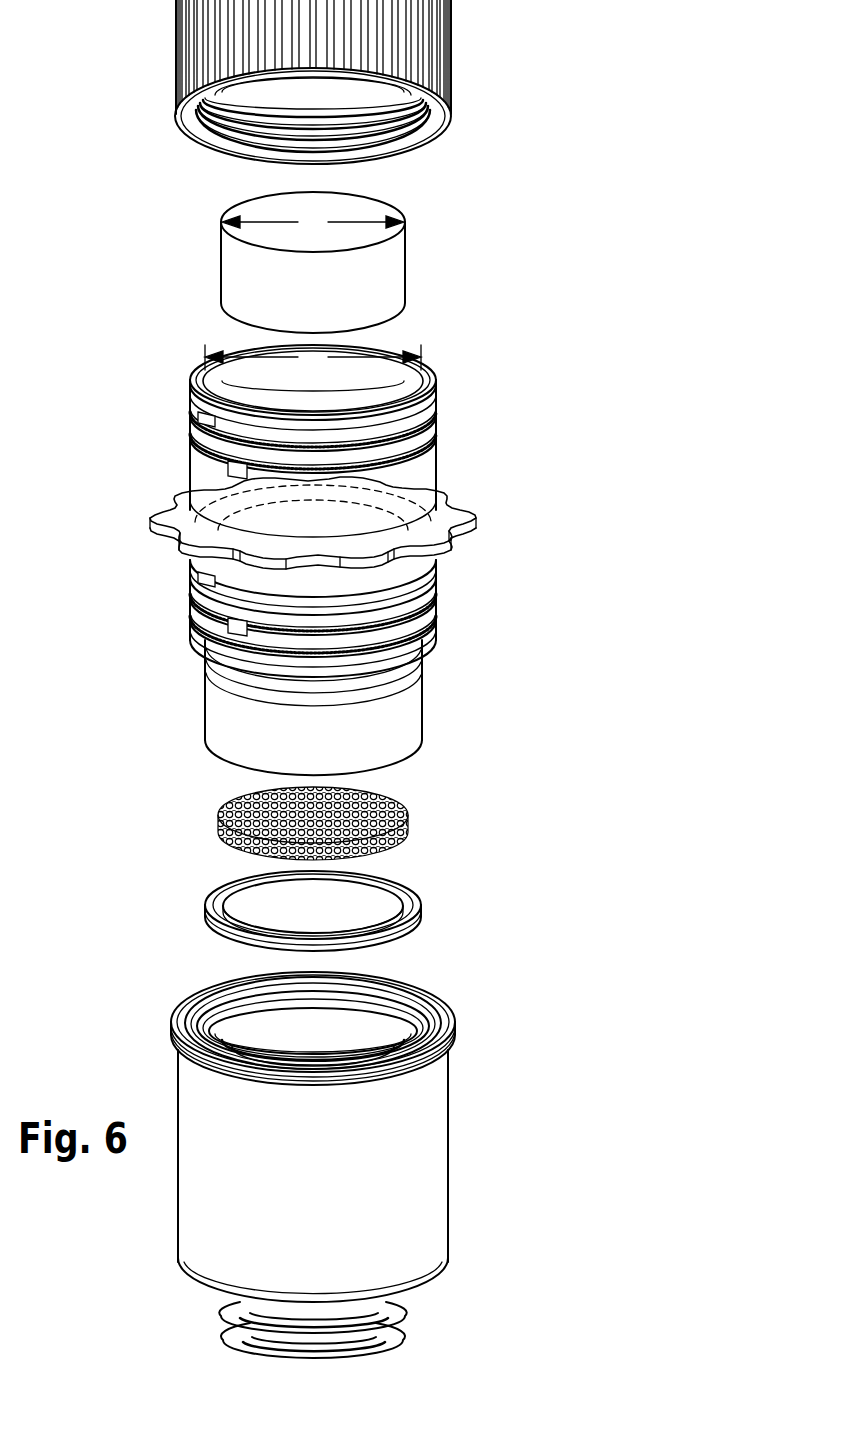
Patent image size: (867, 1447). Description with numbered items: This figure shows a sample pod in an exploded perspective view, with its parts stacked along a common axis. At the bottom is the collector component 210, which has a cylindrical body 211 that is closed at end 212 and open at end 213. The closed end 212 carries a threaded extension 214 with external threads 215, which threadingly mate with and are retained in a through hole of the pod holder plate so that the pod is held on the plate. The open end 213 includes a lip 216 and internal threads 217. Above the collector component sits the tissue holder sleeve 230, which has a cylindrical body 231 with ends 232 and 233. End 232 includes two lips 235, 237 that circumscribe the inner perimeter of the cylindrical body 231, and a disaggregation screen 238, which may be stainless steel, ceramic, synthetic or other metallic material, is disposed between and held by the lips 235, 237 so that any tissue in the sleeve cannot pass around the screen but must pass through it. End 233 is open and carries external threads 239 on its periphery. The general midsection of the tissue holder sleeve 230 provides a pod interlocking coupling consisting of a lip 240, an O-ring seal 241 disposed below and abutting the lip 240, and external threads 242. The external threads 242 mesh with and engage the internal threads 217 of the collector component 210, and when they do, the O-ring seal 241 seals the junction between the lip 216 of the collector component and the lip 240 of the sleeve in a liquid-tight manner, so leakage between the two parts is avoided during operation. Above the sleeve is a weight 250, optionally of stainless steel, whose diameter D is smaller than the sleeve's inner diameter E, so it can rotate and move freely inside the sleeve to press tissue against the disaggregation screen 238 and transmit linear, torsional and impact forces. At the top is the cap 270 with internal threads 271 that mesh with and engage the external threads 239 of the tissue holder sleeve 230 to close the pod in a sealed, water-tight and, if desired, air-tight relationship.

The cap 270 is at (280, 102).
The internal threads 271 is at (380, 125).
The weight 250 is at (235, 262).
The tissue holder sleeve 230 is at (340, 577).
The end 233 is at (400, 390).
The external threads 239 is at (410, 430).
The lip 240 is at (462, 525).
The O-ring seal 241 is at (370, 570).
The external threads 242 is at (202, 600).
The cylindrical body 231 is at (421, 700).
The lip 235 is at (395, 762).
The disaggregation screen 238 is at (250, 800).
The end 232 is at (300, 910).
The lip 237 is at (398, 898).
The collector component 210 is at (331, 1148).
The lip 216 is at (455, 1022).
The internal threads 217 is at (272, 1018).
The end 213 is at (357, 1018).
The cylindrical body 211 is at (450, 1140).
The end 212 is at (448, 1290).
The threaded extension 214 is at (295, 1330).
The external threads 215 is at (362, 1325).